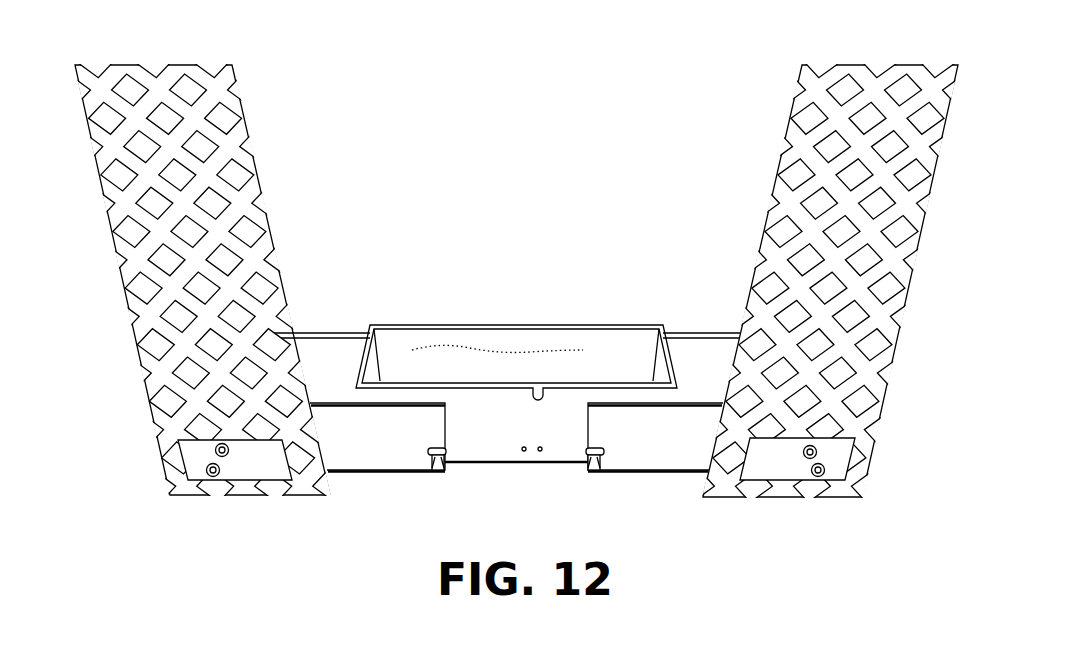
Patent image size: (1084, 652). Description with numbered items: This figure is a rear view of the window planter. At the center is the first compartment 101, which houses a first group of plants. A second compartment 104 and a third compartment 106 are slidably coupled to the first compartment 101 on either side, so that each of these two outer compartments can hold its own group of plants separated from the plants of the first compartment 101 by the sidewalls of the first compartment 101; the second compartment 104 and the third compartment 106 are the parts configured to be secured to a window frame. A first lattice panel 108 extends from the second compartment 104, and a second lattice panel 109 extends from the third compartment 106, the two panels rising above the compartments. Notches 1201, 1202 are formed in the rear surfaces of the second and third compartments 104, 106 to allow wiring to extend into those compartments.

The first compartment 101 is at (497, 442).
The second compartment 104 is at (653, 452).
The third compartment 106 is at (377, 455).
The first lattice panel 108 is at (172, 75).
The second lattice panel 109 is at (845, 73).
The notch 1201 is at (432, 462).
The notch 1202 is at (597, 460).